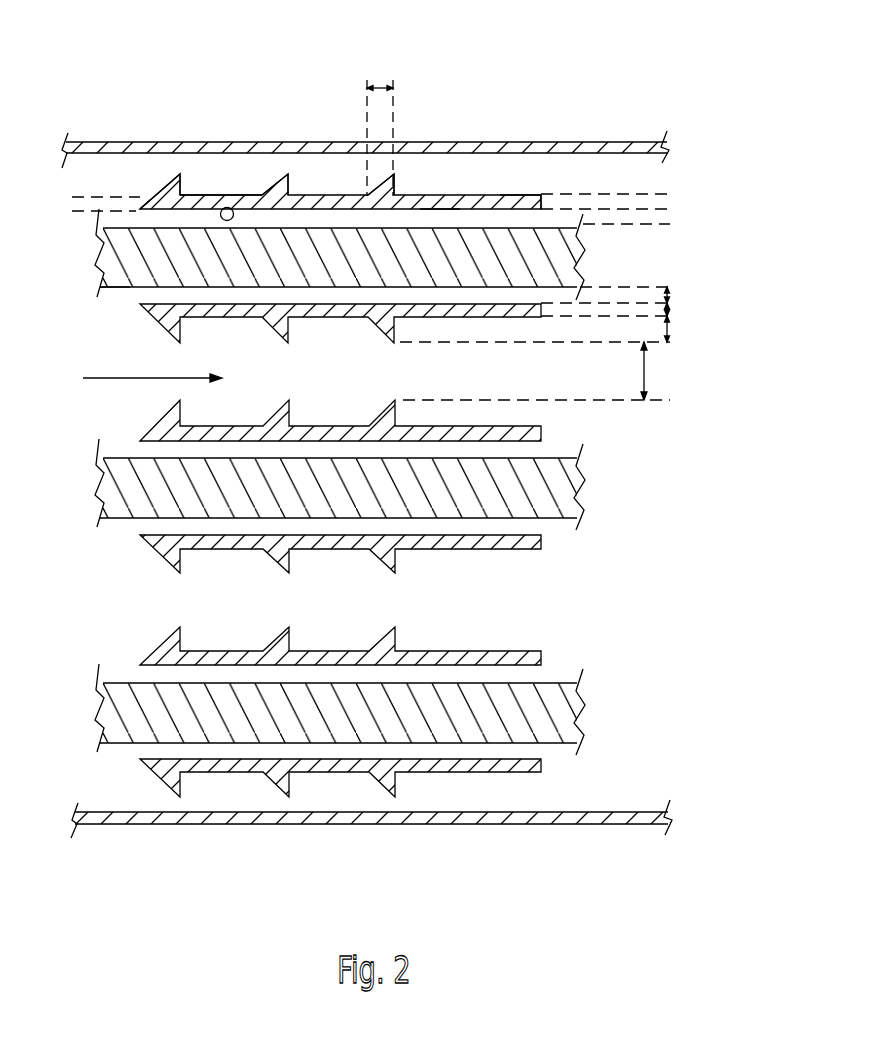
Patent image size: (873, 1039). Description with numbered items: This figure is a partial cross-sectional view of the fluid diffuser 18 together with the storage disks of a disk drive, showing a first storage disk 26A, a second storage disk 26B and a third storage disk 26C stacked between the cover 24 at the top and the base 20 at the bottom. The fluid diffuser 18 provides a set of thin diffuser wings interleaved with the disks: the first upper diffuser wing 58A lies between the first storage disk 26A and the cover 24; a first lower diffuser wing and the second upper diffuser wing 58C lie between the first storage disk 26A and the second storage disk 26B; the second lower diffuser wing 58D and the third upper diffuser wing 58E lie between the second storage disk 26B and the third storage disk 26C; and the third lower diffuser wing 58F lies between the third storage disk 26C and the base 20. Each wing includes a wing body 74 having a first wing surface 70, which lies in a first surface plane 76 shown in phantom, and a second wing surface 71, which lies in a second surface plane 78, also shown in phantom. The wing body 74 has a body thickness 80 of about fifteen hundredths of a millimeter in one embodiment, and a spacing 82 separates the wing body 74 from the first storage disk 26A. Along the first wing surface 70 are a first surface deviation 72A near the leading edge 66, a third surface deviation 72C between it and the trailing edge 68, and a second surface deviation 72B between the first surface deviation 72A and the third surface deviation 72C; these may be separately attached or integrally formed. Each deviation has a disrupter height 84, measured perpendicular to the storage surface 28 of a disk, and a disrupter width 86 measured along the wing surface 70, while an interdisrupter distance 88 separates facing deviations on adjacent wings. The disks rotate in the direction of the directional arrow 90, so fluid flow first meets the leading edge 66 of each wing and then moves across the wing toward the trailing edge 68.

The fluid diffuser 18 is at (531, 193).
The base 20 is at (497, 822).
The cover 24 is at (250, 141).
The first storage disk 26A is at (115, 263).
The second storage disk 26B is at (118, 500).
The third storage disk 26C is at (118, 720).
The storage surface 28 is at (127, 290).
The first upper diffuser wing 58A is at (497, 202).
The second upper diffuser wing 58C is at (523, 428).
The second lower diffuser wing 58D is at (523, 543).
The third upper diffuser wing 58E is at (527, 653).
The third lower diffuser wing 58F is at (543, 772).
The leading edge 66 is at (141, 198).
The trailing edge 68 is at (543, 195).
The first wing surface 70 is at (188, 196).
The second wing surface 71 is at (223, 207).
The first surface deviation 72A is at (170, 181).
The second surface deviation 72B is at (278, 181).
The third surface deviation 72C is at (383, 203).
The wing body 74 is at (438, 203).
The first surface plane 76 is at (672, 193).
The second surface plane 78 is at (672, 208).
The body thickness 80 is at (672, 309).
The spacing 82 is at (672, 296).
The disrupter height 84 is at (672, 330).
The disrupter width 86 is at (372, 85).
The interdisrupter distance 88 is at (646, 375).
The directional arrow 90 is at (105, 377).